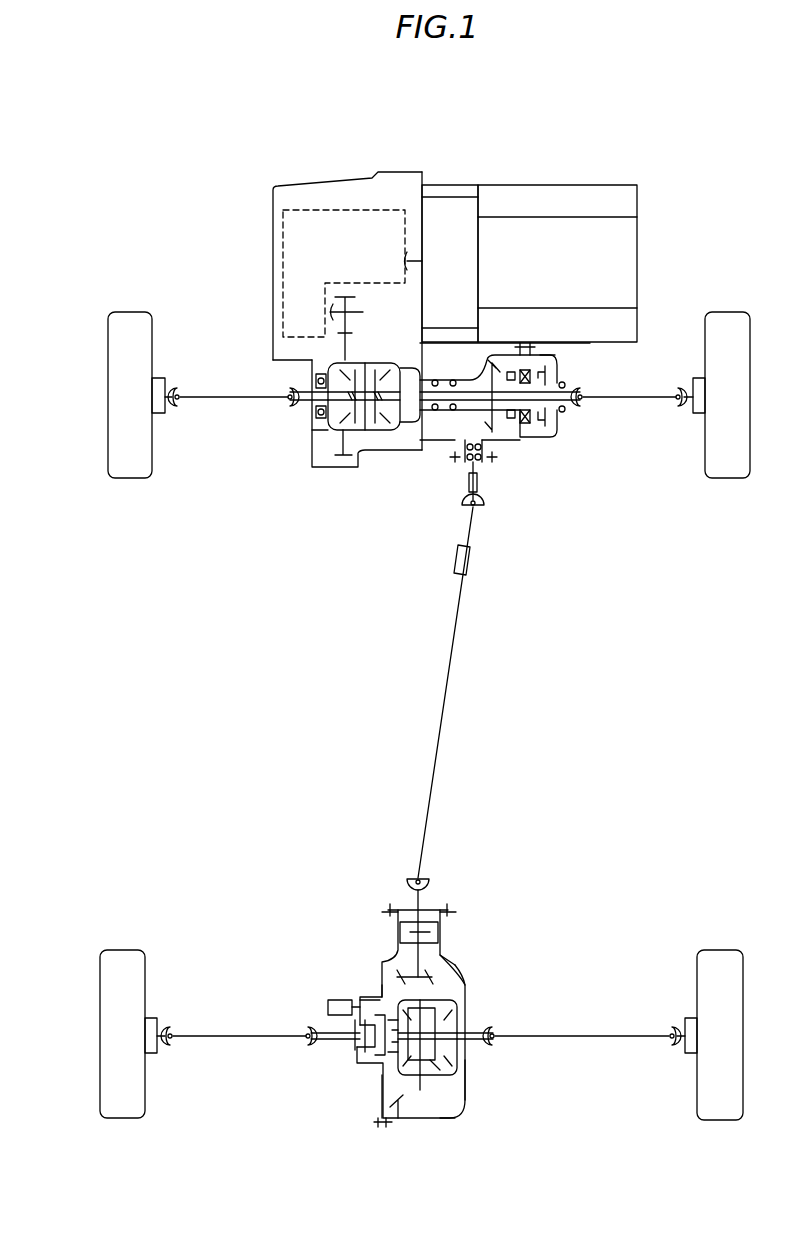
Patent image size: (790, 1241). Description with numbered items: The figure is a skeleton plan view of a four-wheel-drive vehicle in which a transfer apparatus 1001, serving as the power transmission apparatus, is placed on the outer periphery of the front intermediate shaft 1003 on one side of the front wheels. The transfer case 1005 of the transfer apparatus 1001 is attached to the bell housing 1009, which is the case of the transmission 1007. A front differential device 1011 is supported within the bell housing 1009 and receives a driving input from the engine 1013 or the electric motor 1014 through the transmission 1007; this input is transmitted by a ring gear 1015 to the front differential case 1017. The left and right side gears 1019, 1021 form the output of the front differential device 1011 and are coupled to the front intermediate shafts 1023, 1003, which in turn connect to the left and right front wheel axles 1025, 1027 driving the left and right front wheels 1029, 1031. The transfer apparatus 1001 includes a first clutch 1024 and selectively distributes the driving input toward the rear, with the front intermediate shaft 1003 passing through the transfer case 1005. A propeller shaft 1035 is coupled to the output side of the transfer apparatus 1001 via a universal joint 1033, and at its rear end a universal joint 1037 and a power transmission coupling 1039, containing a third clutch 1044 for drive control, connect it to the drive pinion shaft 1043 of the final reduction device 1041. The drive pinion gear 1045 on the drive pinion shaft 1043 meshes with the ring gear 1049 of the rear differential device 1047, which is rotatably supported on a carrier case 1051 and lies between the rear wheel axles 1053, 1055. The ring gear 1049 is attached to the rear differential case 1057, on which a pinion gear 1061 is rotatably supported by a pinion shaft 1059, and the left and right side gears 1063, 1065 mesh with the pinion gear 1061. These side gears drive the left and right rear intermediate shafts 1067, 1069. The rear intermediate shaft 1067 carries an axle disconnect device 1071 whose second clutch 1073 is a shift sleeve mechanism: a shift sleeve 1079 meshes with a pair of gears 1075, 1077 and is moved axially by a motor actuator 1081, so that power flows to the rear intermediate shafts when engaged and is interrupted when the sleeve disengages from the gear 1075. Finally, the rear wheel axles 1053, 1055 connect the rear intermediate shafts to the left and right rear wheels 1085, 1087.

The transfer apparatus 1001 is at (556, 434).
The front intermediate shaft 1003 is at (465, 375).
The transfer case 1005 is at (565, 415).
The transmission 1007 is at (337, 205).
The bell housing 1009 is at (312, 463).
The front differential device 1011 is at (378, 434).
The engine 1013 is at (583, 227).
The electric motor 1014 is at (437, 217).
The ring gear 1015 is at (340, 458).
The front differential case 1017 is at (392, 432).
The left side gear 1019 is at (312, 440).
The right side gear 1021 is at (400, 440).
The front intermediate shaft 1023 is at (305, 367).
The first clutch 1024 is at (557, 357).
The left front wheel axle 1025 is at (222, 393).
The right front wheel axle 1027 is at (650, 395).
The left front wheel 1029 is at (132, 310).
The right front wheel 1031 is at (735, 312).
The universal joint 1033 is at (485, 505).
The propeller shaft 1035 is at (437, 705).
The universal joint 1037 is at (428, 883).
The power transmission coupling 1039 is at (446, 930).
The final reduction device 1041 is at (360, 993).
The drive pinion shaft 1043 is at (400, 945).
The third clutch 1044 is at (448, 955).
The drive pinion gear 1045 is at (448, 985).
The rear differential device 1047 is at (433, 1078).
The ring gear 1049 is at (383, 1125).
The carrier case 1051 is at (456, 1118).
The left rear wheel axle 1053 is at (230, 1034).
The right rear wheel axle 1055 is at (600, 1034).
The rear differential case 1057 is at (468, 1100).
The pinion shaft 1059 is at (425, 1090).
The pinion gear 1061 is at (465, 1005).
The left side gear 1063 is at (402, 1060).
The right side gear 1065 is at (455, 1060).
The left rear intermediate shaft 1067 is at (355, 1030).
The right rear intermediate shaft 1069 is at (490, 1046).
The axle disconnect device 1071 is at (387, 987).
The second clutch 1073 is at (360, 1050).
The gear 1075 is at (368, 1052).
The gear 1077 is at (380, 1058).
The shift sleeve 1079 is at (392, 1058).
The motor actuator 1081 is at (340, 1000).
The left rear wheel 1085 is at (128, 950).
The right rear wheel 1087 is at (730, 950).